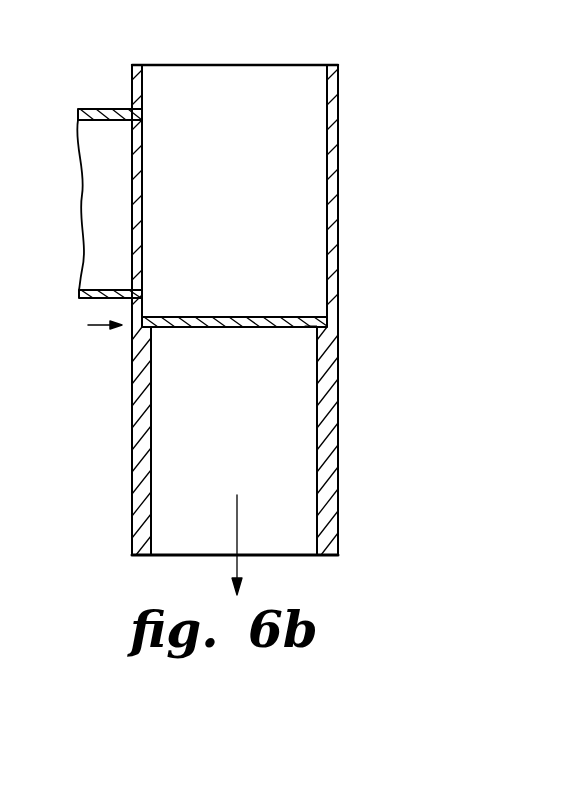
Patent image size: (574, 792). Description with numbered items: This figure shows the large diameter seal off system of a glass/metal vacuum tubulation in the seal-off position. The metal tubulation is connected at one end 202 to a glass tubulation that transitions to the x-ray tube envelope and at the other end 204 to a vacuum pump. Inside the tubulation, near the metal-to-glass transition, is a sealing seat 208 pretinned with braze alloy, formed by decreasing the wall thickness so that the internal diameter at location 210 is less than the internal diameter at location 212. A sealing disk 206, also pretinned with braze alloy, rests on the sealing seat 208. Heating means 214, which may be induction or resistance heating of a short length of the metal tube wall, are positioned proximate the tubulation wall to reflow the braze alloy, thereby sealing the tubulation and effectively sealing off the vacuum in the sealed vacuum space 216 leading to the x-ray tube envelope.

The end connected to glass tubulation 202 is at (330, 556).
The end connected to vacuum pump 204 is at (113, 108).
The sealing disk 206 is at (235, 317).
The sealing seat 208 is at (312, 328).
The location of smaller internal diameter 210 is at (338, 380).
The location of larger internal diameter 212 is at (330, 213).
The heating means 214 is at (347, 325).
The sealed vacuum space 216 is at (260, 432).